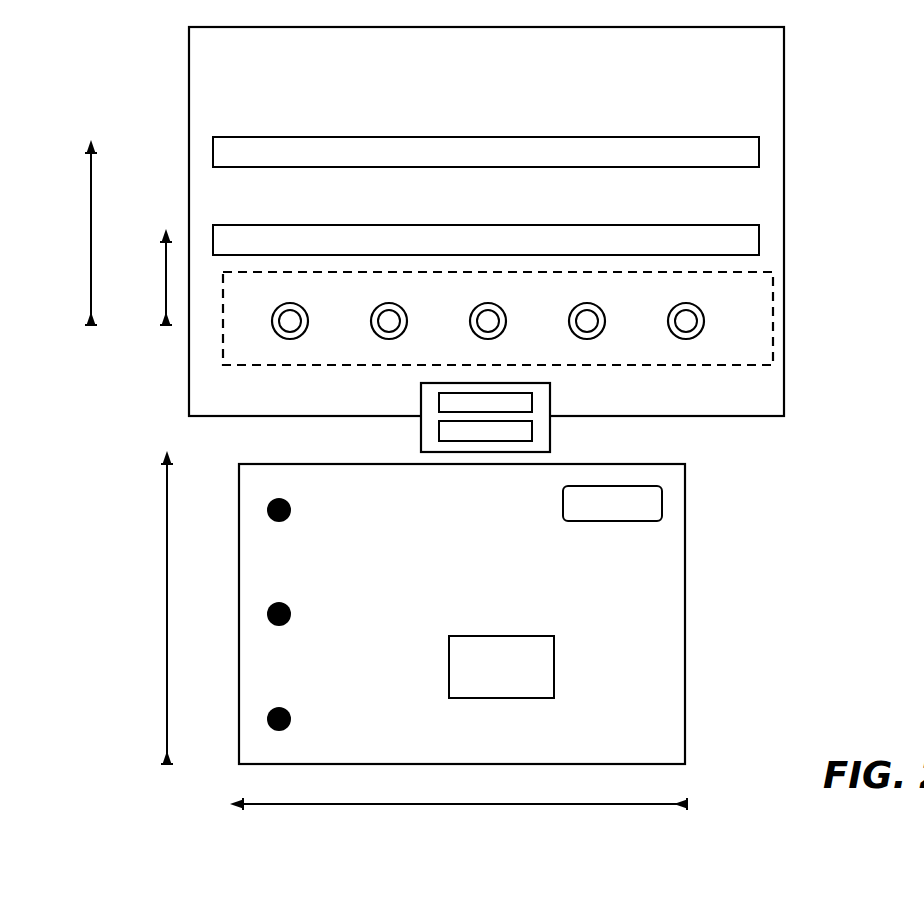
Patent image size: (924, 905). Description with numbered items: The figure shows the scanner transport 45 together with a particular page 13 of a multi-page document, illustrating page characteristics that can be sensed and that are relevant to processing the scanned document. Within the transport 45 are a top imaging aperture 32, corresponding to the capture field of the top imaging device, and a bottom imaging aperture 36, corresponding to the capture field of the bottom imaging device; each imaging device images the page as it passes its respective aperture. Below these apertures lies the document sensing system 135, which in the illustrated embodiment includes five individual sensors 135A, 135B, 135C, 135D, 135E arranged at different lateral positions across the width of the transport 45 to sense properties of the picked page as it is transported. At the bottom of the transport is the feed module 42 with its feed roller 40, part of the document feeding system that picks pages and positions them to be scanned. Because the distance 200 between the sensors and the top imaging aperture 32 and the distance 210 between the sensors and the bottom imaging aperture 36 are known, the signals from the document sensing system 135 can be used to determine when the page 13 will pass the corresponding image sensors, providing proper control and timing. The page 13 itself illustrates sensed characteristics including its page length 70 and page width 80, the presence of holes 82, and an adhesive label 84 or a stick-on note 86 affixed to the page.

The page 13 is at (685, 613).
The top imaging aperture 32 is at (487, 225).
The bottom imaging aperture 36 is at (487, 137).
The feed roller 40 is at (421, 433).
The feed module 42 is at (532, 432).
The transport 45 is at (784, 220).
The page length 70 is at (165, 606).
The page width 80 is at (497, 805).
The holes 82 is at (267, 510).
The adhesive label 84 is at (613, 522).
The stick-on note 86 is at (500, 699).
The document sensing system 135 is at (773, 312).
The sensor 135A is at (296, 303).
The sensor 135B is at (395, 303).
The sensor 135C is at (494, 303).
The sensor 135D is at (593, 303).
The sensor 135E is at (692, 303).
The distance 200 is at (165, 283).
The distance 210 is at (90, 240).